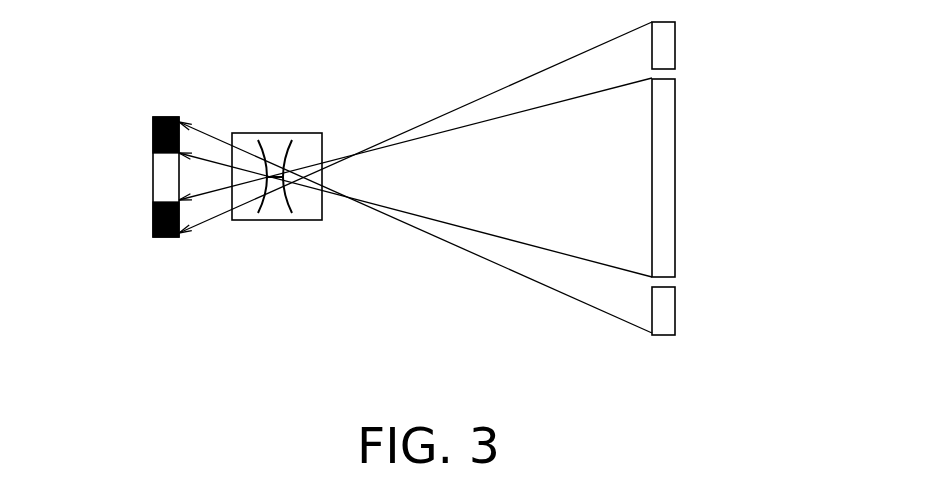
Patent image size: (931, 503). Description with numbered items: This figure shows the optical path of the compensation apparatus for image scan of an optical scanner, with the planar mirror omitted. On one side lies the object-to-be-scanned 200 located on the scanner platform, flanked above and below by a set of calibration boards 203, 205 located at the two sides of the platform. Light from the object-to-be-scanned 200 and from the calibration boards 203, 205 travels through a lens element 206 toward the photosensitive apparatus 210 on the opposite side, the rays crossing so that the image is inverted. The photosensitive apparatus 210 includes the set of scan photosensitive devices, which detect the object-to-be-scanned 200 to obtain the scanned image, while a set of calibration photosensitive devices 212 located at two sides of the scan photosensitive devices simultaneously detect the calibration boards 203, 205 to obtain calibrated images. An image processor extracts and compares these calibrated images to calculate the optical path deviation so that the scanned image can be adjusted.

The object-to-be-scanned 200 is at (662, 192).
The calibration board 203 is at (667, 48).
The calibration board 205 is at (662, 320).
The lens 206 is at (270, 213).
The photosensitive apparatus 210 is at (163, 178).
The calibration photosensitive devices 212 is at (153, 133).